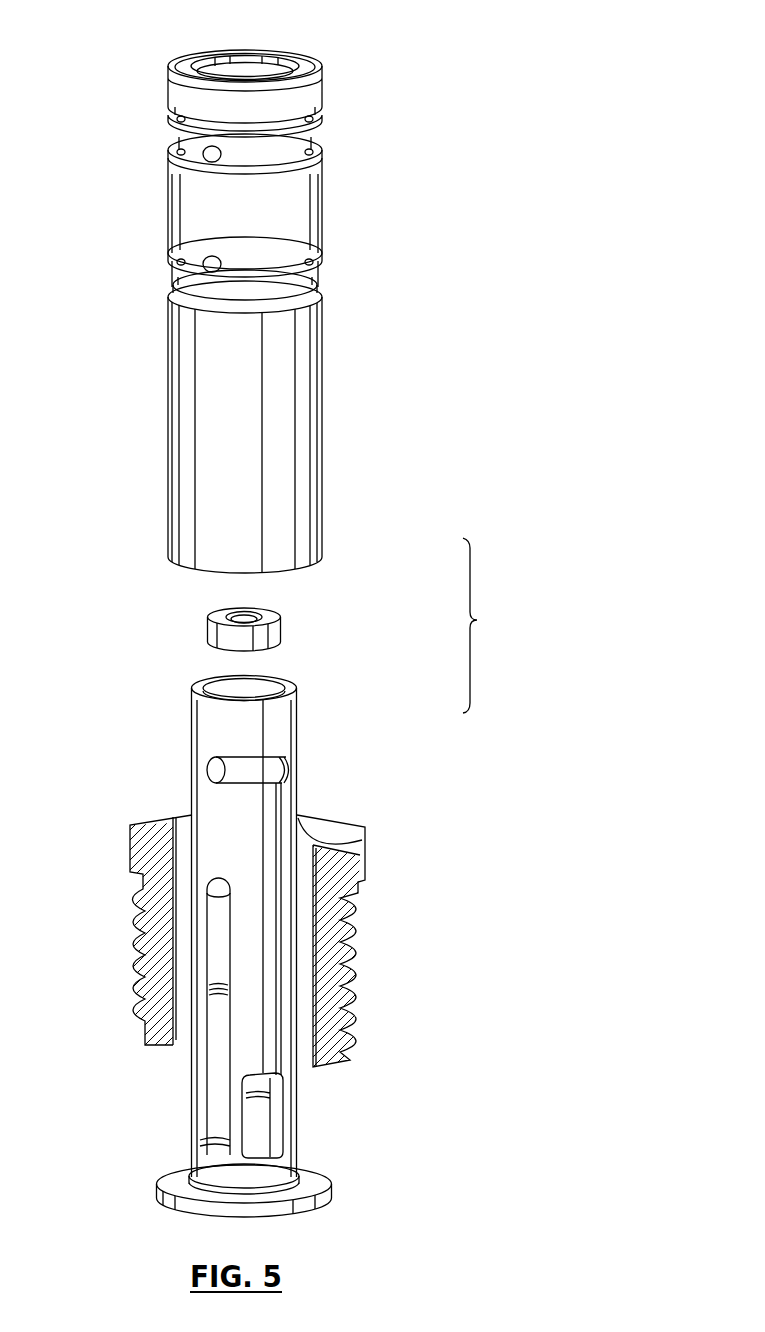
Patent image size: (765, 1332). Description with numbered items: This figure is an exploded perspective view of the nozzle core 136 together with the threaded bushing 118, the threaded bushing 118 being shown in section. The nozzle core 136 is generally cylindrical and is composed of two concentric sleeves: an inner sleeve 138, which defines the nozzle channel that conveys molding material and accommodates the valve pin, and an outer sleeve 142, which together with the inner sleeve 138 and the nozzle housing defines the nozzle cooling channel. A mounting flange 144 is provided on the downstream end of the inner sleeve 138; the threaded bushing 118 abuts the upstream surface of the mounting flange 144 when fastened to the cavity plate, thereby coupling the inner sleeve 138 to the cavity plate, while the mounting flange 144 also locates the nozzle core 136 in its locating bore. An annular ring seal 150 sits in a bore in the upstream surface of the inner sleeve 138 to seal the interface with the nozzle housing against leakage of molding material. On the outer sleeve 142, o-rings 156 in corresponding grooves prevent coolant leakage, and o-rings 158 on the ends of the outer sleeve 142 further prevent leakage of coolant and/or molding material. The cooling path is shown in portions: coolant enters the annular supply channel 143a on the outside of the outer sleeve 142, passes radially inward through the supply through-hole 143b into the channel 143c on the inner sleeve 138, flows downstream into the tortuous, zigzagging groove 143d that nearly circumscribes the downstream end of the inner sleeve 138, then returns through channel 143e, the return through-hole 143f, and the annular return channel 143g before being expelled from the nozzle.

The o-rings 158 is at (182, 60).
The o-rings 156 is at (325, 116).
The annular supply channel 143a is at (320, 150).
The supply through-hole 143b is at (167, 170).
The annular return channel 143g is at (318, 260).
The return through-hole 143f is at (168, 290).
The outer sleeve 142 is at (322, 518).
The annular ring seal 150 is at (282, 625).
The nozzle core 136 is at (497, 625).
The inner sleeve 138 is at (297, 713).
The channel 143c is at (287, 795).
The threaded bushing 118 is at (363, 872).
The channel 143e is at (218, 933).
The tortuous, zigzagging groove 143d is at (293, 1147).
The mounting flange 144 is at (332, 1197).